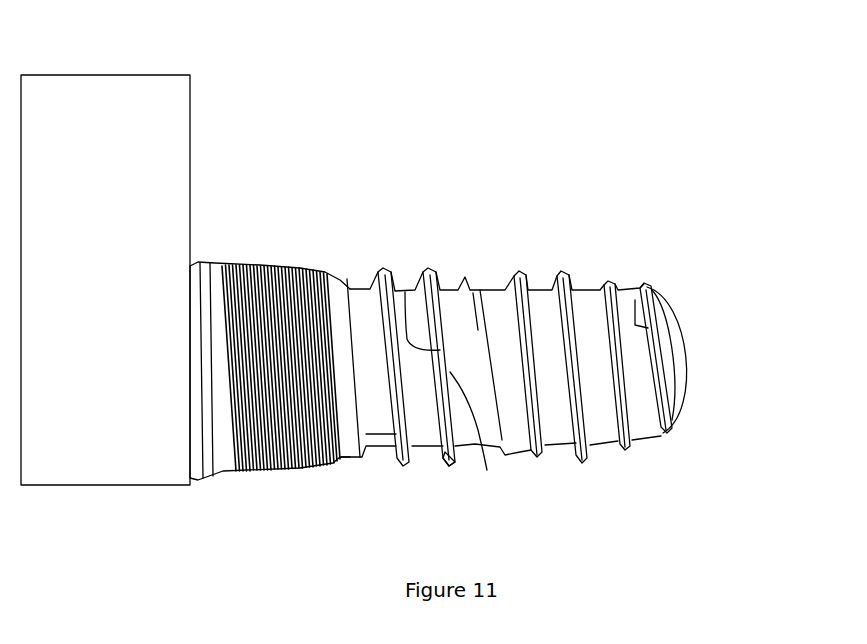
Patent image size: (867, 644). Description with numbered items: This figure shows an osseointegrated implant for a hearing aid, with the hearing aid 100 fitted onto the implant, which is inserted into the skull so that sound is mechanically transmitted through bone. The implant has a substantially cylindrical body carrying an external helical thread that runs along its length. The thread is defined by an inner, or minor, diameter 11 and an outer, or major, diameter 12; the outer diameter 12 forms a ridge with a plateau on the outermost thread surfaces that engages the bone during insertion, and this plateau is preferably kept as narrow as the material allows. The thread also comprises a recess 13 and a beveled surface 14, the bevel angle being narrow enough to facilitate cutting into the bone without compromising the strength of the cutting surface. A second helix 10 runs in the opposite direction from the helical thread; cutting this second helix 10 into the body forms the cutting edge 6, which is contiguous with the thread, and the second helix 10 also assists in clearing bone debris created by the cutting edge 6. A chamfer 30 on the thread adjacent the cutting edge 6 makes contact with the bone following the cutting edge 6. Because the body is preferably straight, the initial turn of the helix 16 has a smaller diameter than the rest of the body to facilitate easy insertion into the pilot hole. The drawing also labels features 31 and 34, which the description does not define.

The hearing aid 100 is at (170, 150).
The cutting edge 6 is at (405, 310).
The inner diameter 11 is at (493, 303).
The beveled surface 14 is at (425, 269).
The second helix 10 is at (512, 287).
The outer diameter 12 is at (561, 280).
The apical thread 31 is at (583, 407).
The initial turn of the helix 16 is at (688, 406).
The groove 34 is at (417, 394).
The chamfer 30 is at (450, 463).
The recess 13 is at (478, 448).